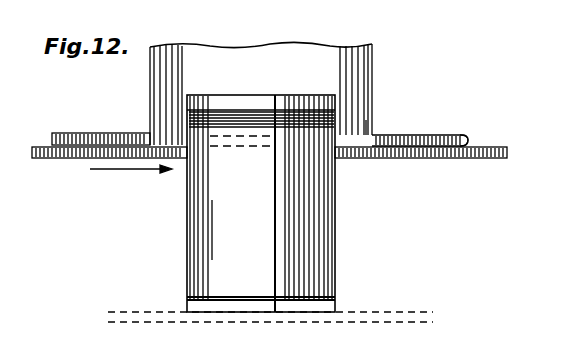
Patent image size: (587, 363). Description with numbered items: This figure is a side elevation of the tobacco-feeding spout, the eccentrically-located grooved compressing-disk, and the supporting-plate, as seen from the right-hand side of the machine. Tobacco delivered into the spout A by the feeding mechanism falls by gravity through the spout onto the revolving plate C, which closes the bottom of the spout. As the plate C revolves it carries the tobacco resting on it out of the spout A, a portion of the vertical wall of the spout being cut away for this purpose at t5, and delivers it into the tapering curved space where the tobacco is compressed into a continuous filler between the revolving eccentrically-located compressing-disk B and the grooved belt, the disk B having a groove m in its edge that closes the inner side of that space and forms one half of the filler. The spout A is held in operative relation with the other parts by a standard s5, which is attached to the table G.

The spout A is at (261, 93).
The compressing-disk B is at (260, 132).
The revolving plate C is at (376, 150).
The table G is at (363, 317).
The groove m is at (470, 138).
The cut-away portion of spout wall t5 is at (366, 130).
The standard s5 is at (261, 203).